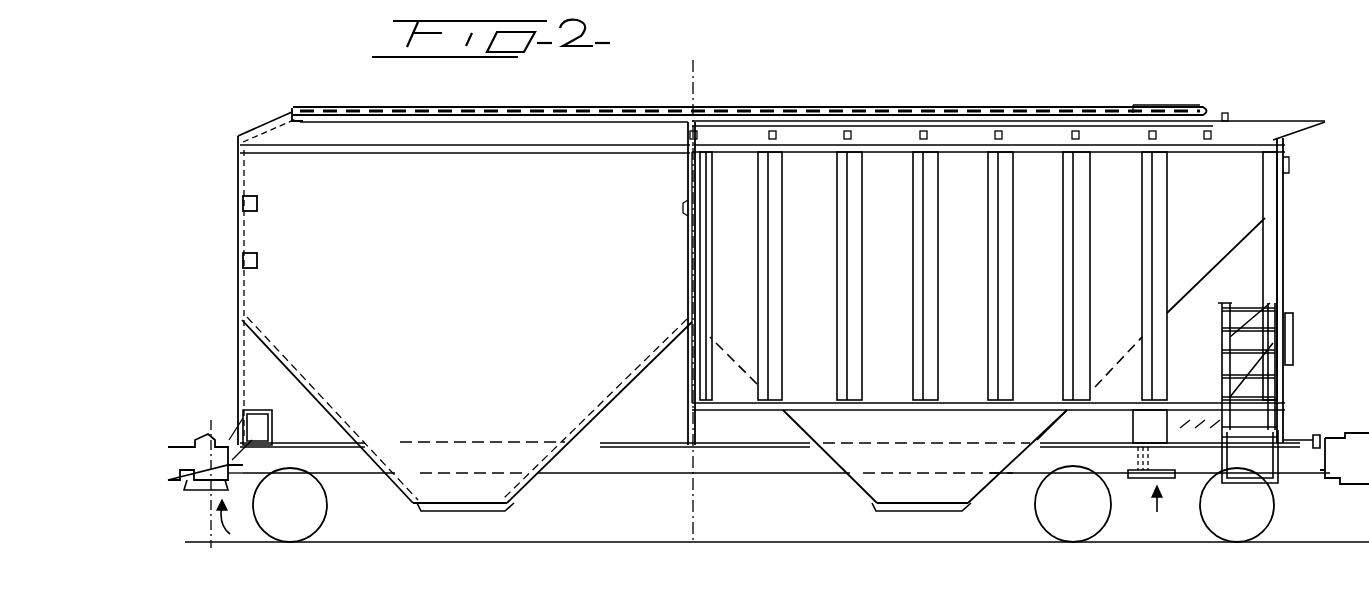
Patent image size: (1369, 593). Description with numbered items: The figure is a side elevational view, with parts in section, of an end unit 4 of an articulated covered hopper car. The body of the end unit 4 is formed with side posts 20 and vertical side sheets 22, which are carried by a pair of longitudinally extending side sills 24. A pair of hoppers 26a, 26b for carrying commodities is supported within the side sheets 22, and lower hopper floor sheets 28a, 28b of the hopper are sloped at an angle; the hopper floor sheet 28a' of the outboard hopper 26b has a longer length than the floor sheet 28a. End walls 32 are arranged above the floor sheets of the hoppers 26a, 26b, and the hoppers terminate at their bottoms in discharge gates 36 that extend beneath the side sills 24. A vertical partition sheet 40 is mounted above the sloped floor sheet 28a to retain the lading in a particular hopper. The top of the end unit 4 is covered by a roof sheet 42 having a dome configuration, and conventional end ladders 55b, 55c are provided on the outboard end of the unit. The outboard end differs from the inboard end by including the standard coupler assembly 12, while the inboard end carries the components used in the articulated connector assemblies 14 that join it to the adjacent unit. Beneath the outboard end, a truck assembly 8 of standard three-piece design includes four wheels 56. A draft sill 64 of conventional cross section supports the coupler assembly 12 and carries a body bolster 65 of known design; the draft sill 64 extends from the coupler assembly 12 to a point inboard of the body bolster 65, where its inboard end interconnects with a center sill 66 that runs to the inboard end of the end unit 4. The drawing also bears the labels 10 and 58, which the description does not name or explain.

The end unit 4 is at (1168, 104).
The truck assembly 8 is at (1163, 510).
The direction arrow 10 is at (237, 520).
The coupler assembly 12 is at (1333, 443).
The articulated connector assembly 14 is at (182, 447).
The side posts 20 is at (767, 230).
The vertical side sheets 22 is at (1022, 217).
The side sills 24 is at (793, 403).
The hopper 26a is at (478, 264).
The outboard hopper 26b is at (885, 170).
The lower hopper floor sheet 28a is at (597, 411).
The hopper floor sheet 28a' is at (1180, 282).
The lower hopper floor sheet 28b is at (312, 382).
The end walls 32 is at (240, 268).
The discharge gates 36 is at (482, 512).
The vertical partition sheet 40 is at (688, 178).
The roof sheet 42 is at (565, 108).
The end ladder 55b is at (1283, 213).
The end ladder 55c is at (1290, 336).
The wheels 56 is at (1085, 503).
The side sill 58 is at (637, 442).
The draft sill 64 is at (1190, 453).
The body bolster 65 is at (1142, 453).
The center sill 66 is at (757, 457).